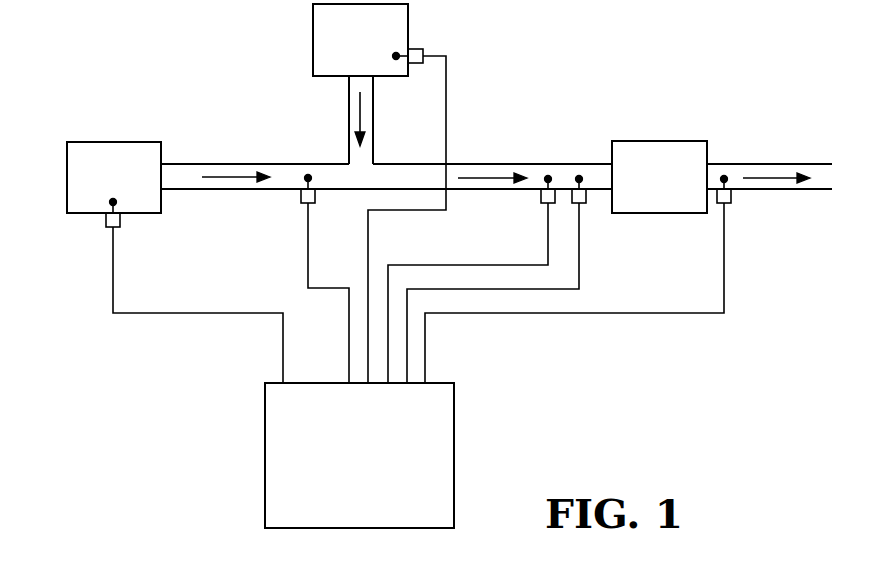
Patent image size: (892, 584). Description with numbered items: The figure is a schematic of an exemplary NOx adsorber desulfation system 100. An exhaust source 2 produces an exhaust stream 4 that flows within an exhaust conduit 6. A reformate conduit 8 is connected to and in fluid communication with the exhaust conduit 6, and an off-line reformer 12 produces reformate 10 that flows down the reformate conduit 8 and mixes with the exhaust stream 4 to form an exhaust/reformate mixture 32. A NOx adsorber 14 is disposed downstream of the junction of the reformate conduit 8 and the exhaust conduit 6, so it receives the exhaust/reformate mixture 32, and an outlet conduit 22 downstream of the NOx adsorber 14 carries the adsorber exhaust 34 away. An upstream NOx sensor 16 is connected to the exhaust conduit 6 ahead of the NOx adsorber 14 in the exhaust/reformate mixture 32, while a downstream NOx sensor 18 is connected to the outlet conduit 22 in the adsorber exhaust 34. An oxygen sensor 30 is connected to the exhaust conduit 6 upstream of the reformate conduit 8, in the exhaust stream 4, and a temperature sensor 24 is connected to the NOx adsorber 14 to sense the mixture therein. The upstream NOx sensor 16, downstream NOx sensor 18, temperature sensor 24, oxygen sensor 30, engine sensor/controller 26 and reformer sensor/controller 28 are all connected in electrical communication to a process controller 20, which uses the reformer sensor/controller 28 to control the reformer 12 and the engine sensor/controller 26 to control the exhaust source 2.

The desulfation system 100 is at (146, 58).
The exhaust source 2 is at (98, 190).
The exhaust stream 4 is at (222, 177).
The exhaust conduit 6 is at (288, 164).
The reformate conduit 8 is at (373, 130).
The reformate 10 is at (358, 122).
The off-line reformer 12 is at (376, 53).
The NOx adsorber 14 is at (676, 191).
The upstream NOx sensor 16 is at (538, 200).
The downstream NOx sensor 18 is at (733, 200).
The process controller 20 is at (375, 470).
The outlet conduit 22 is at (795, 191).
The temperature sensor 24 is at (588, 200).
The engine sensor/controller 26 is at (106, 222).
The reformer sensor/controller 28 is at (420, 48).
The oxygen sensor 30 is at (308, 267).
The exhaust/reformate mixture 32 is at (480, 173).
The adsorber exhaust 34 is at (767, 175).